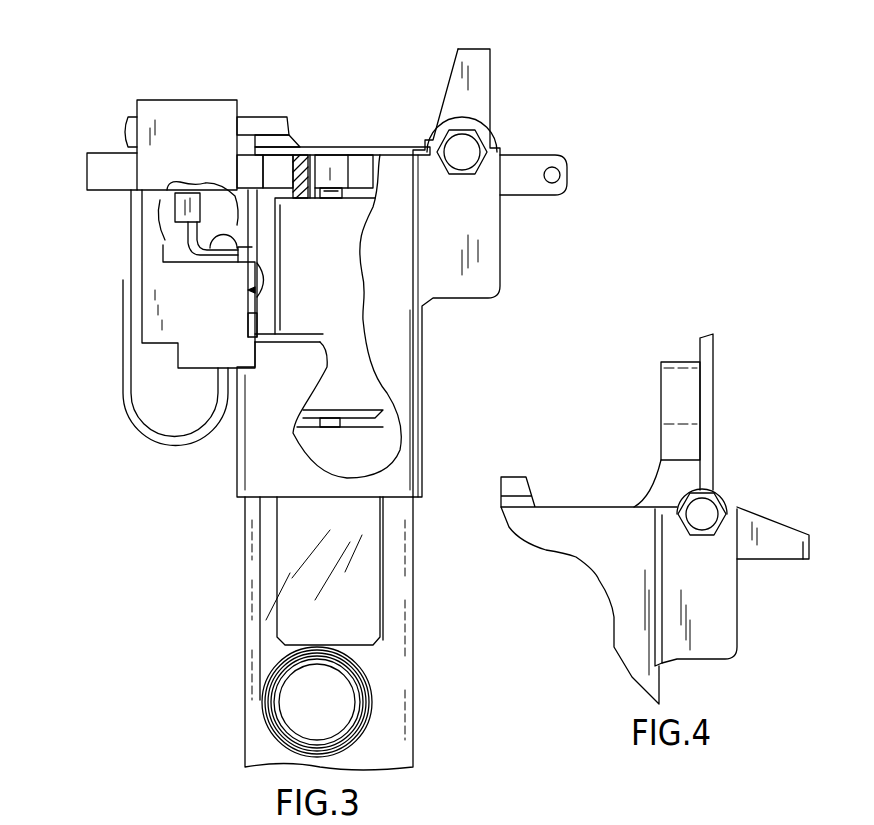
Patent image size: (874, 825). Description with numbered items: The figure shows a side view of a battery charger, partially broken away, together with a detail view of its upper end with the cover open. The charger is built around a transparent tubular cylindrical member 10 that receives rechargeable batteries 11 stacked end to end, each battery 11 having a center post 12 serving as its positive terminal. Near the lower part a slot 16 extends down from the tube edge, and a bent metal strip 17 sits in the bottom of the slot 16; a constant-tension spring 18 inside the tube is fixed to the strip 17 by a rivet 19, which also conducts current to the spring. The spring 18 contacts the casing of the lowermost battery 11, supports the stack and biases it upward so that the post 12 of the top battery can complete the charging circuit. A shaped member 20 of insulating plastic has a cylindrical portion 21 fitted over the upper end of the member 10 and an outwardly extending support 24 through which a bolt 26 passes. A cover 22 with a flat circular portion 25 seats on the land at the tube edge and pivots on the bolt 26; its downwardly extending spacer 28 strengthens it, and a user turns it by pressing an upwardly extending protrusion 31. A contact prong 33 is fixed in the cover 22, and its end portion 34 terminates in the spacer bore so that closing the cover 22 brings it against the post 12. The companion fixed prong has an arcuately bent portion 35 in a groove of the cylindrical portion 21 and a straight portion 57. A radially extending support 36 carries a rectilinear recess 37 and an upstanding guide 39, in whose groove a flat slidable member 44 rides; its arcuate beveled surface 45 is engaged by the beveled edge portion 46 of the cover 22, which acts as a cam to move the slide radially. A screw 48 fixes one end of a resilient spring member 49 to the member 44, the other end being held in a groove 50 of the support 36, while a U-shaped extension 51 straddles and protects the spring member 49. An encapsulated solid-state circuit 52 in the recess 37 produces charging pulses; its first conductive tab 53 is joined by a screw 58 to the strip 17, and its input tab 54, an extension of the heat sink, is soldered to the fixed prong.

In FIG. 3, the tubular cylindrical member 10 is at (415, 673).
In FIG. 3, the battery 11 is at (350, 386).
In FIG. 3, the center post 12 is at (333, 200).
In FIG. 3, the slot 16 is at (235, 213).
In FIG. 3, the bent metal strip 17 is at (250, 292).
In FIG. 3, the constant-tension spring 18 is at (190, 563).
In FIG. 3, the rivet 19 is at (263, 283).
In FIG. 3, the shaped member 20 is at (449, 312).
In FIG. 4, the shaped member 20 is at (589, 590).
In FIG. 3, the cylindrical portion 21 is at (424, 443).
In FIG. 3, the cover 22 is at (396, 104).
In FIG. 4, the cover 22 is at (768, 426).
In FIG. 3, the support 24 is at (493, 271).
In FIG. 4, the support 24 is at (726, 625).
In FIG. 3, the circular portion 25 is at (325, 147).
In FIG. 4, the circular portion 25 is at (713, 395).
In FIG. 3, the bolt 26 is at (469, 146).
In FIG. 4, the bolt 26 is at (708, 508).
In FIG. 3, the spacer 28 is at (305, 200).
In FIG. 3, the protrusion 31 is at (481, 74).
In FIG. 4, the protrusion 31 is at (769, 550).
In FIG. 3, the contact prong 33 is at (567, 182).
In FIG. 4, the contact prong 33 is at (809, 539).
In FIG. 3, the end portion 34 is at (338, 162).
In FIG. 3, the arcuately bent portion 35 is at (282, 178).
In FIG. 3, the radially extending support 36 is at (192, 352).
In FIG. 3, the rectilinear recess 37 is at (213, 208).
In FIG. 3, the vertical guide 39 is at (163, 108).
In FIG. 3, the slidable member 44 is at (278, 112).
In FIG. 4, the slidable member 44 is at (667, 434).
In FIG. 3, the arcuate beveled surface 45 is at (298, 137).
In FIG. 3, the edge surface portion 46 is at (275, 153).
In FIG. 4, the edge surface portion 46 is at (706, 336).
In FIG. 3, the screw 48 is at (125, 130).
In FIG. 3, the spring member 49 is at (165, 450).
In FIG. 3, the groove 50 is at (222, 367).
In FIG. 3, the U-shaped extension 51 is at (88, 172).
In FIG. 3, the encapsulated solid-state circuit 52 is at (180, 210).
In FIG. 3, the first conductive tab 53 is at (187, 228).
In FIG. 3, the input tab 54 is at (193, 195).
In FIG. 3, the straight portion 57 is at (240, 167).
In FIG. 3, the screw 58 is at (230, 238).